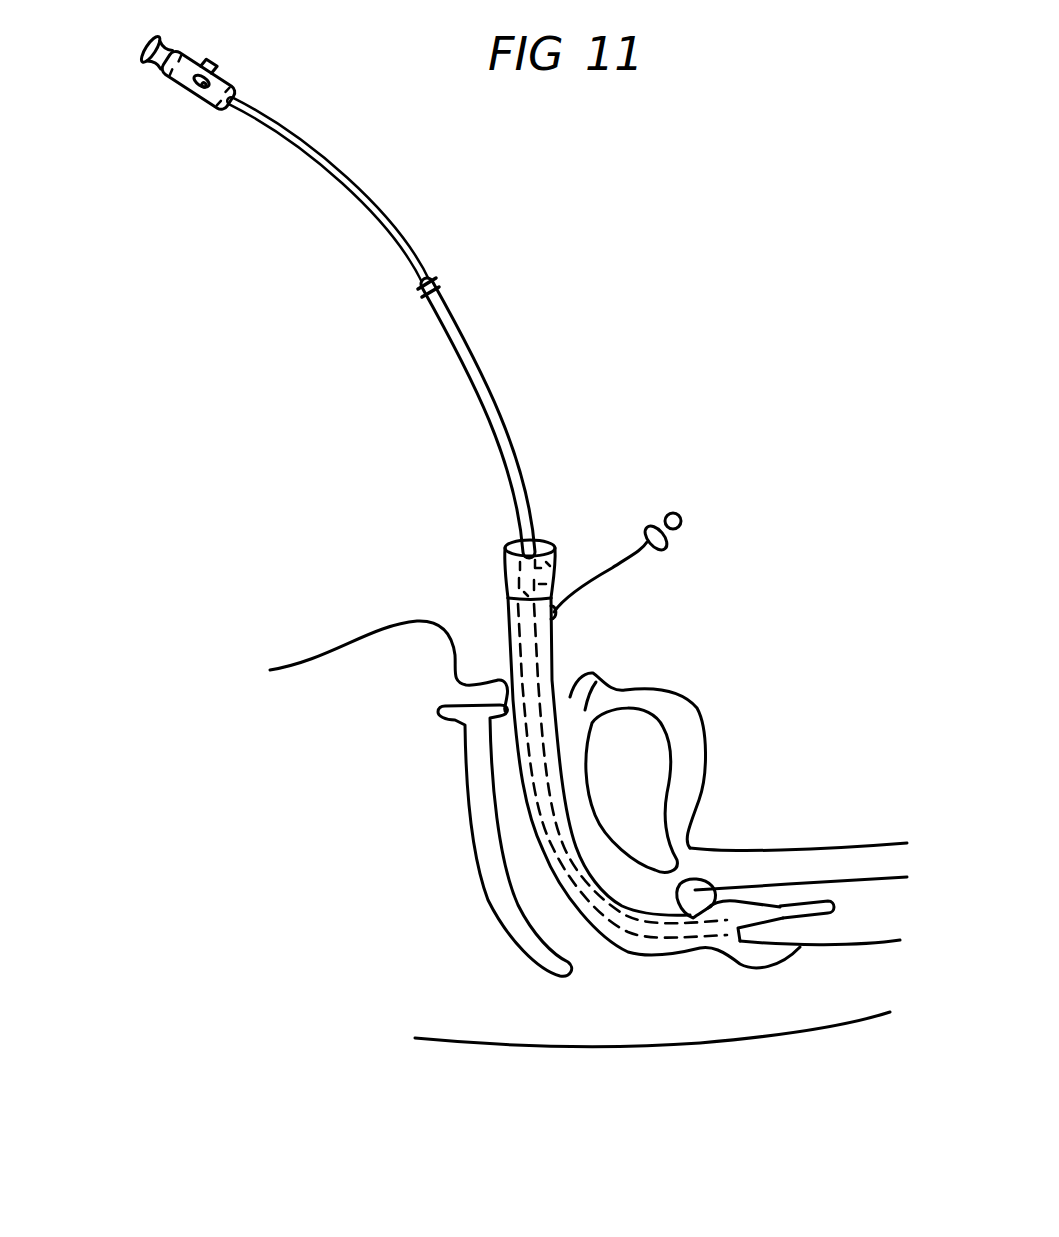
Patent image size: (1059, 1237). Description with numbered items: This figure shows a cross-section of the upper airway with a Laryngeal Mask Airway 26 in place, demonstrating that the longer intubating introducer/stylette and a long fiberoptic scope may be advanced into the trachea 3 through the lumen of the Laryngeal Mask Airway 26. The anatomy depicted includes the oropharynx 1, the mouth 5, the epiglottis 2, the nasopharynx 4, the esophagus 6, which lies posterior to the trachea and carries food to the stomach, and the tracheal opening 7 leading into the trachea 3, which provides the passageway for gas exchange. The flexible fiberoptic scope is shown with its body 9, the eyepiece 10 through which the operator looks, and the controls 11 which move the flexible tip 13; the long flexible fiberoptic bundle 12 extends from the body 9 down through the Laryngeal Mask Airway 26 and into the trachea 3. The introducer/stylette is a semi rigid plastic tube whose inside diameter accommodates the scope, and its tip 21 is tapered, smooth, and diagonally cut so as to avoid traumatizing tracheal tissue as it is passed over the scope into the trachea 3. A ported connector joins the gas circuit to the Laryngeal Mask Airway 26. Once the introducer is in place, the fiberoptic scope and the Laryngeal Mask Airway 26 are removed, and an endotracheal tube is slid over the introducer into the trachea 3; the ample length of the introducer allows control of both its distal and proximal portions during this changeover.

The oropharynx 1 is at (603, 997).
The epiglottis 2 is at (694, 880).
The trachea 3 is at (860, 906).
The nasopharynx 4 is at (485, 1026).
The mouth 5 is at (583, 673).
The esophagus 6 is at (837, 1010).
The tracheal opening 7 is at (737, 902).
The body of the scope 9 is at (184, 88).
The eyepiece 10 is at (142, 52).
The controls 11 is at (218, 67).
The long flexible fiberoptic bundle 12 is at (360, 206).
The flexible tip 13 is at (824, 900).
The tip of the introducer 21 is at (780, 903).
The Laryngeal Mask Airway 26 is at (552, 646).